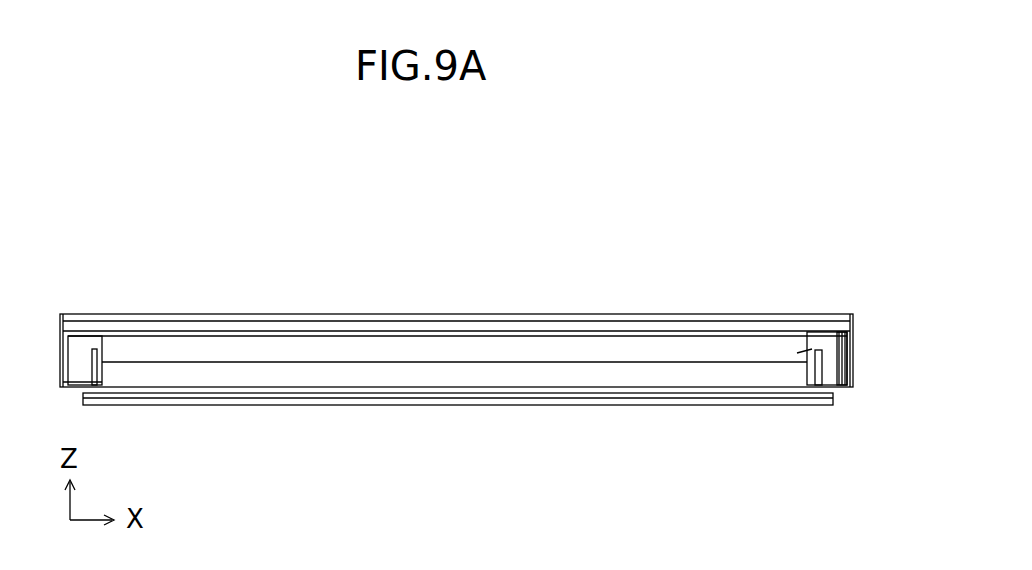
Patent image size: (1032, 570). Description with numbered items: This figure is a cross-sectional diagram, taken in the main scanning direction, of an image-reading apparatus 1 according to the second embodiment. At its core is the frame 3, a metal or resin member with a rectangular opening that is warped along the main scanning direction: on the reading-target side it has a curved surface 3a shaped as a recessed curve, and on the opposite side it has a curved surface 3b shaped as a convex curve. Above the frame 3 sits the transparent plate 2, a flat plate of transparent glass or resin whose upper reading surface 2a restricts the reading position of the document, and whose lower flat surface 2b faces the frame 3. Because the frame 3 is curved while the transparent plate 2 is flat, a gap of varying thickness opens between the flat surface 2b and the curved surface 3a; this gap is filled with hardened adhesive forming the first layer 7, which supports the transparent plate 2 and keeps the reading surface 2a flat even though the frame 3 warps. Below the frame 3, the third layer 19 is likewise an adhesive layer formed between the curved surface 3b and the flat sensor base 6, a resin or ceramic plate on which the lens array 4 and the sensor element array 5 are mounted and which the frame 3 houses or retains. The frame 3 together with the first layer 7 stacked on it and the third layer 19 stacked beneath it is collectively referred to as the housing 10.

The image-reading apparatus 1 is at (118, 221).
The transparent plate 2 is at (113, 316).
The reading surface 2a is at (280, 316).
The flat surface 2b is at (573, 317).
The frame 3 is at (767, 328).
The curved surface 3a is at (393, 331).
The curved surface 3b is at (810, 398).
The lens array 4 is at (855, 353).
The sensor element array 5 is at (137, 400).
The sensor base 6 is at (560, 404).
The first layer 7 is at (692, 318).
The housing 10 is at (857, 238).
The third layer 19 is at (777, 393).